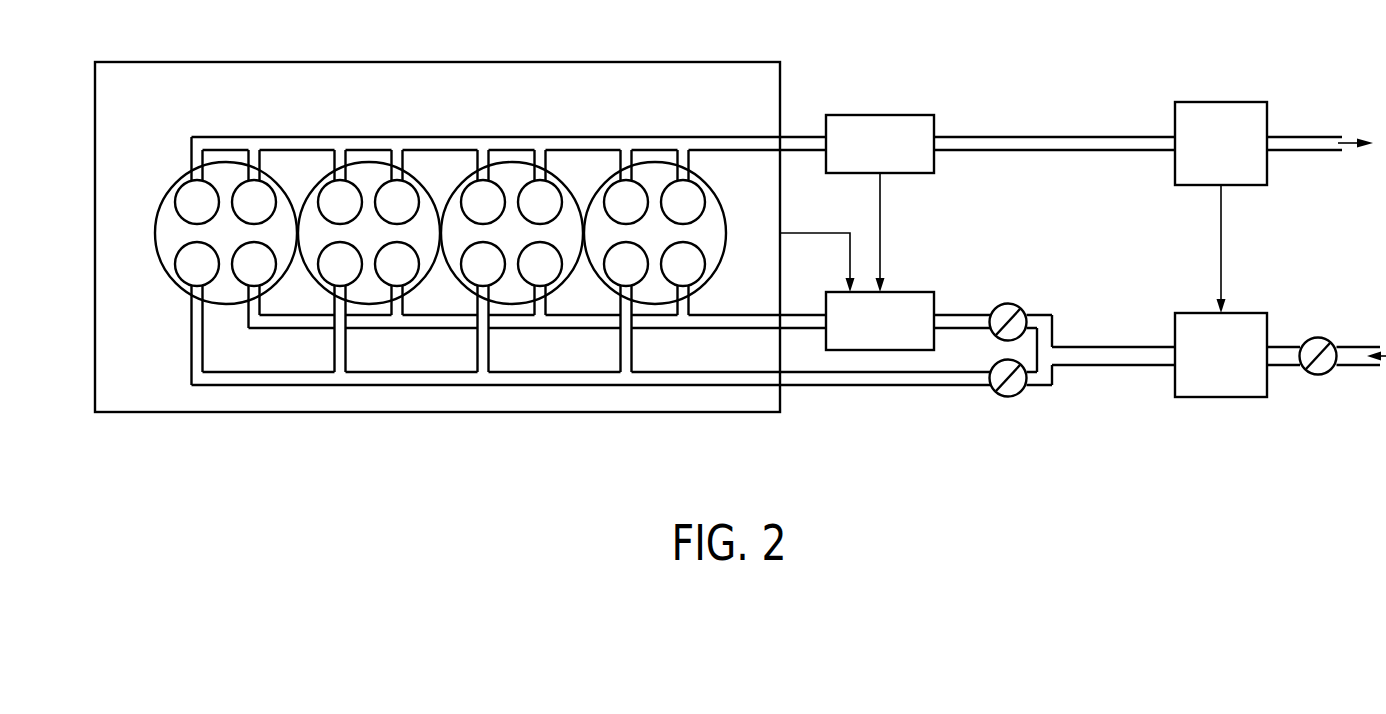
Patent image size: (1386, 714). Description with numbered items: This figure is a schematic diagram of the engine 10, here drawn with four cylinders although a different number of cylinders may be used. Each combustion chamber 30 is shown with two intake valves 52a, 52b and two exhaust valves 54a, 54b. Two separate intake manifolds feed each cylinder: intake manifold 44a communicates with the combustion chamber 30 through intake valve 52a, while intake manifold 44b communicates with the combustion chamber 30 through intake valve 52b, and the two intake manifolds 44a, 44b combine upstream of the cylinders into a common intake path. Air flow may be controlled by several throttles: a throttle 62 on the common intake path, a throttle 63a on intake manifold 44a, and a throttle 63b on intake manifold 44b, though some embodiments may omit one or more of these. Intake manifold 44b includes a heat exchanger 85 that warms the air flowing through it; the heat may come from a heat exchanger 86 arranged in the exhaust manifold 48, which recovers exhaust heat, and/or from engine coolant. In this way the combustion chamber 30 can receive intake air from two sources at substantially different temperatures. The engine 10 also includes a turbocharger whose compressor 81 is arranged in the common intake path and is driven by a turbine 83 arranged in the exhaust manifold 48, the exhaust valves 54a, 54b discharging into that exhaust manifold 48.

The engine 10 is at (415, 104).
The combustion chamber 30 is at (172, 238).
The intake valve 52a is at (187, 264).
The intake valve 52b is at (247, 268).
The exhaust valve 54a is at (187, 198).
The exhaust valve 54b is at (232, 191).
The exhaust manifold 48 is at (727, 137).
The intake manifold 44a is at (727, 376).
The intake manifold 44b is at (745, 318).
The heat exchanger 86 is at (868, 160).
The heat exchanger 85 is at (868, 334).
The turbine 83 is at (1208, 158).
The compressor 81 is at (1208, 366).
The throttle 63a is at (1007, 397).
The throttle 63b is at (1006, 304).
The throttle 62 is at (1318, 375).